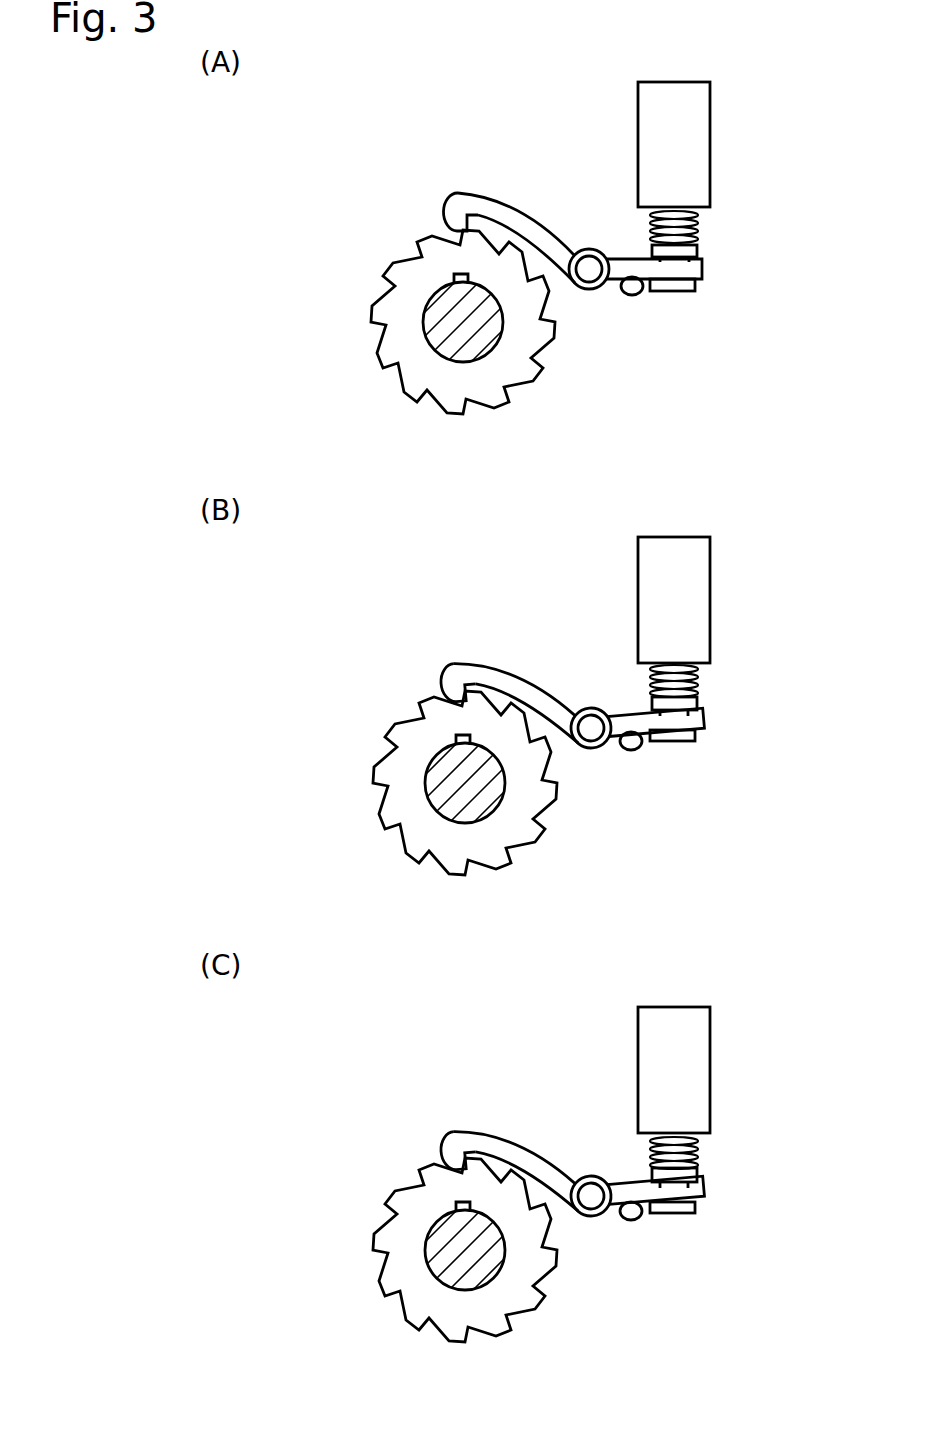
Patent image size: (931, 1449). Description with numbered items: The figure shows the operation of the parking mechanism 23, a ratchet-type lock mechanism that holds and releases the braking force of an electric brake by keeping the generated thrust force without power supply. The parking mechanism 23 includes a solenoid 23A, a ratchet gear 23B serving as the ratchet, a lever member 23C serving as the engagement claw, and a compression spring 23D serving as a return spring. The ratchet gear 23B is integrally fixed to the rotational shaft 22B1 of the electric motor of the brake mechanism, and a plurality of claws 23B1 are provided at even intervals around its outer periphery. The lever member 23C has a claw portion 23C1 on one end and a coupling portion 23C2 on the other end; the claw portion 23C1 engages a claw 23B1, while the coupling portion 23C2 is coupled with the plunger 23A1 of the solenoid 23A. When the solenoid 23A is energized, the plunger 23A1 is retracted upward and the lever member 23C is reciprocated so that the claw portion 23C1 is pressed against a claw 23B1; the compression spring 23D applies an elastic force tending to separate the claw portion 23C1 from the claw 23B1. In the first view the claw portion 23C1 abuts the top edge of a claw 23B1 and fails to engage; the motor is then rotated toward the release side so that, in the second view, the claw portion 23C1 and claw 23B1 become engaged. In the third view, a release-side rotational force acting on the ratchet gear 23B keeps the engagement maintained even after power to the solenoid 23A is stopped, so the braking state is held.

The parking mechanism 23 is at (407, 222).
The solenoid 23A is at (720, 673).
The plunger 23A1 is at (678, 262).
The ratchet gear 23B is at (449, 749).
The claw 23B1 is at (470, 236).
The lever member 23C is at (626, 689).
The claw portion 23C1 is at (460, 225).
The coupling portion 23C2 is at (690, 272).
The compression spring 23D is at (692, 236).
The rotational shaft 22B1 is at (463, 318).